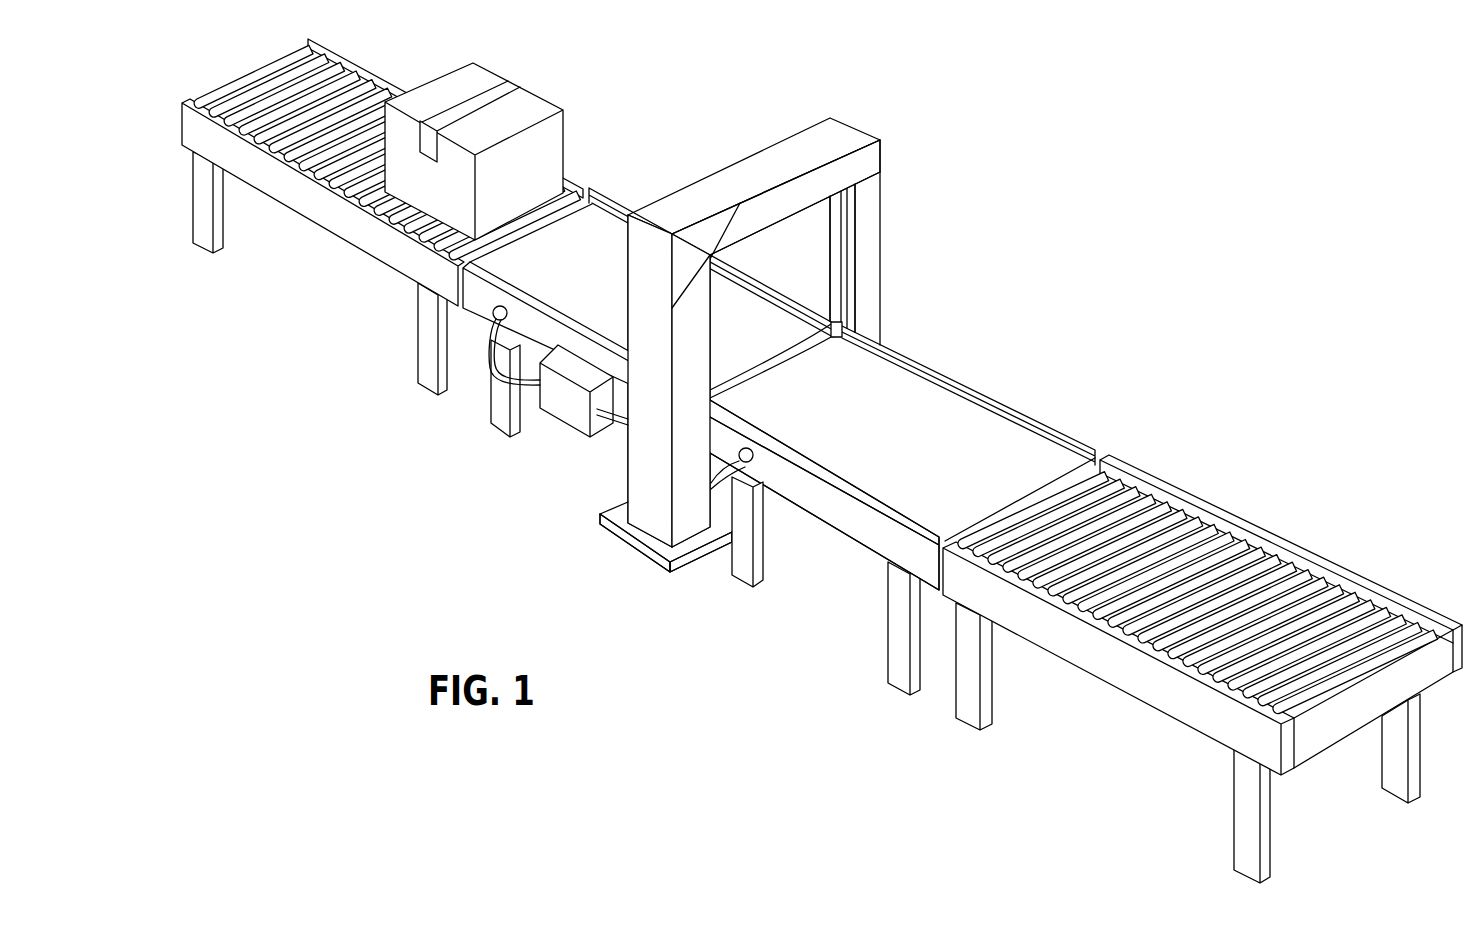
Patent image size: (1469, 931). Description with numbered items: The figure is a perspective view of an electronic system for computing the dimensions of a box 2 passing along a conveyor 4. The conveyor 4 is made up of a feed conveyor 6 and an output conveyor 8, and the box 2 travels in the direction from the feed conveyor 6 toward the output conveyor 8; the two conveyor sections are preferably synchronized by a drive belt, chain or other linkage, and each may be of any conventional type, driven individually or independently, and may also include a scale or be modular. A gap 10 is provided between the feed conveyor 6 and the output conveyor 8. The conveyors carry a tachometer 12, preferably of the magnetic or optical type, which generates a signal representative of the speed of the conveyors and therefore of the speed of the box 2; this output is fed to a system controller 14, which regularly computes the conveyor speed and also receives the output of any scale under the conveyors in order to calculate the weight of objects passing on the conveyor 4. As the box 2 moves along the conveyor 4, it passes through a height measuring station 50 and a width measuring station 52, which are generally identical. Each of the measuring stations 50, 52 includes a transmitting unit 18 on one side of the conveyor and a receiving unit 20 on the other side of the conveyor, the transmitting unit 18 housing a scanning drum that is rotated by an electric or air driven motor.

The box 2 is at (480, 75).
The conveyor 4 is at (340, 77).
The feed conveyor 6 is at (620, 209).
The output conveyor 8 is at (1021, 417).
The gap 10 is at (853, 331).
The tachometer 12 is at (491, 312).
The system controller 14 is at (565, 418).
The transmitting unit 18 is at (790, 160).
The receiving unit 20 is at (599, 521).
The height measuring station 50 is at (847, 201).
The width measuring station 52 is at (790, 160).